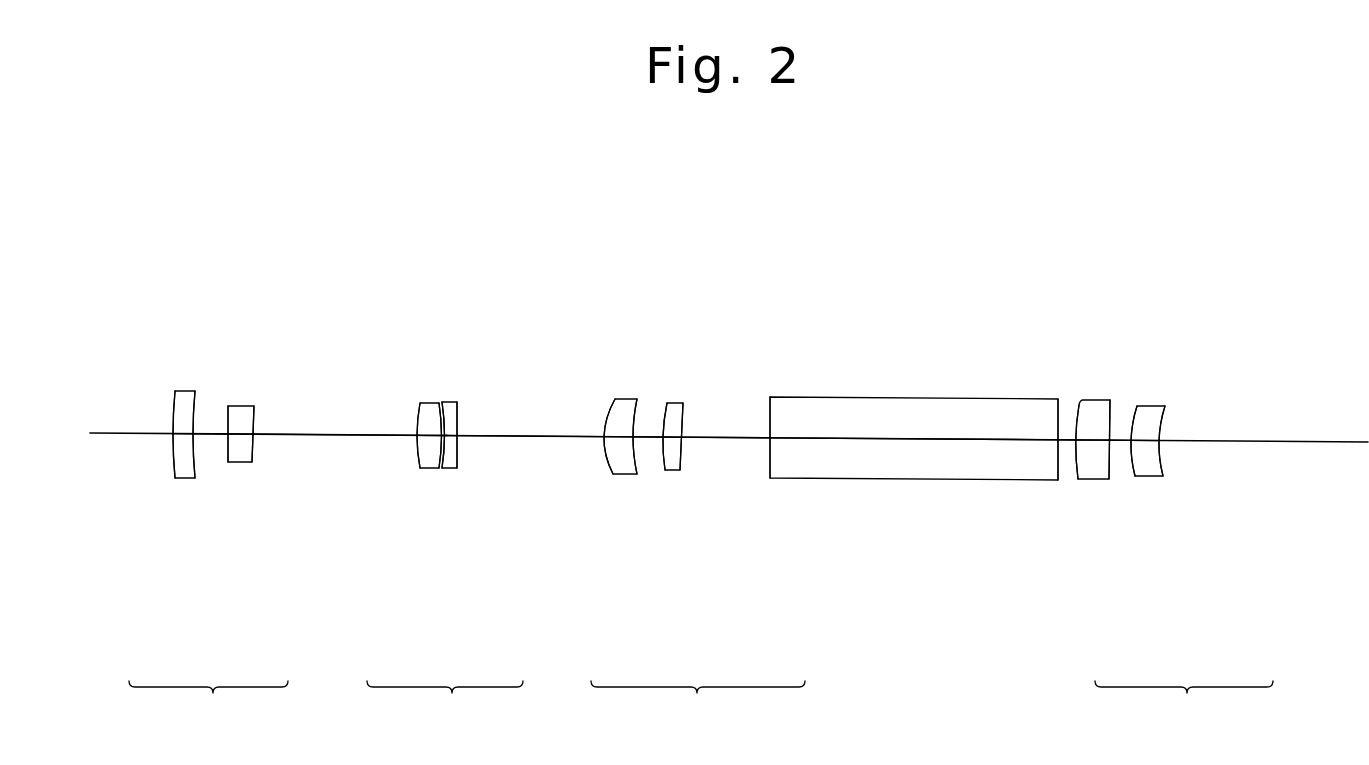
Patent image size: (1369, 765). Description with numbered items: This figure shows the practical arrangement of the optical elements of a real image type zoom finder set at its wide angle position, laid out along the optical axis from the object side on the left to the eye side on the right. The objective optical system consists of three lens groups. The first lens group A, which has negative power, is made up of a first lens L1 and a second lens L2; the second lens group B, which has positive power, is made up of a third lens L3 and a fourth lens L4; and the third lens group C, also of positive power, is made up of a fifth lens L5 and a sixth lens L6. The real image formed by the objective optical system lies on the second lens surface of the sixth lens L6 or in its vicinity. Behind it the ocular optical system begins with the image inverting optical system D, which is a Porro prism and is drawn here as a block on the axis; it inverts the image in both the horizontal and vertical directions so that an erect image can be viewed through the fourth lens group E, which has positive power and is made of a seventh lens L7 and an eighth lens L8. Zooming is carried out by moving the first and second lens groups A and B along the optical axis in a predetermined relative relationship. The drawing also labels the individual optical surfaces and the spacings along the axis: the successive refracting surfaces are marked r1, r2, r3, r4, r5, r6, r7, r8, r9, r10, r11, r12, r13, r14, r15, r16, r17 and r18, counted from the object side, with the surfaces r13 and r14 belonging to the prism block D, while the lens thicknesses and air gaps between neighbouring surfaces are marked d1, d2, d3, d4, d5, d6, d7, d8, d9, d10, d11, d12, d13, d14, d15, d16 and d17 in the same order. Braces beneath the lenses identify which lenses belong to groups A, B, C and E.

The radius of curvature of first lens surface r1 is at (175, 391).
The radius of curvature of second lens surface r2 is at (195, 392).
The radius of curvature of third lens surface r3 is at (229, 405).
The radius of curvature of fourth lens surface r4 is at (254, 406).
The radius of curvature of fifth lens surface r5 is at (421, 403).
The radius of curvature of sixth lens surface r6 is at (440, 402).
The radius of curvature of seventh lens surface r7 is at (442, 402).
The radius of curvature of eighth lens surface r8 is at (457, 402).
The radius of curvature of ninth lens surface r9 is at (615, 399).
The radius of curvature of tenth lens surface r10 is at (638, 399).
The radius of curvature of eleventh lens surface r11 is at (667, 403).
The radius of curvature of twelfth lens surface r12 is at (683, 403).
The radius of curvature of prism entrance surface r13 is at (770, 397).
The radius of curvature of prism exit surface r14 is at (1062, 440).
The radius of curvature of fifteenth surface r15 is at (1080, 400).
The radius of curvature of sixteenth surface r16 is at (1110, 400).
The radius of curvature of seventeenth surface r17 is at (1137, 406).
The radius of curvature of eighteenth surface r18 is at (1165, 406).
The thickness of first lens d1 is at (180, 478).
The air space between first and second lens d2 is at (209, 434).
The thickness of second lens d3 is at (239, 440).
The air space between lens groups A and B d4 is at (332, 434).
The thickness of third lens d5 is at (429, 435).
The air space between third and fourth lens d6 is at (447, 436).
The thickness of fourth lens d7 is at (457, 436).
The air space between lens groups B and C d8 is at (530, 436).
The thickness of fifth lens d9 is at (619, 437).
The air space between fifth and sixth lens d10 is at (647, 437).
The thickness of sixth lens d11 is at (672, 437).
The air space between sixth lens and prism d12 is at (725, 437).
The thickness of prism d13 is at (913, 439).
The air space between prism and seventh lens d14 is at (1064, 440).
The thickness of seventh lens d15 is at (1093, 440).
The air space between seventh and eighth lens d16 is at (1119, 440).
The thickness of eighth lens d17 is at (1147, 440).
The first lens L1 is at (175, 477).
The second lens L2 is at (253, 447).
The third lens L3 is at (422, 457).
The fourth lens L4 is at (457, 440).
The fifth lens L5 is at (609, 455).
The sixth lens L6 is at (687, 413).
The seventh lens L7 is at (1088, 473).
The eighth lens L8 is at (1160, 451).
The first lens group A is at (208, 708).
The second lens group B is at (445, 708).
The third lens group C is at (698, 708).
The image inverting optical system D is at (992, 478).
The fourth lens group E is at (1184, 708).